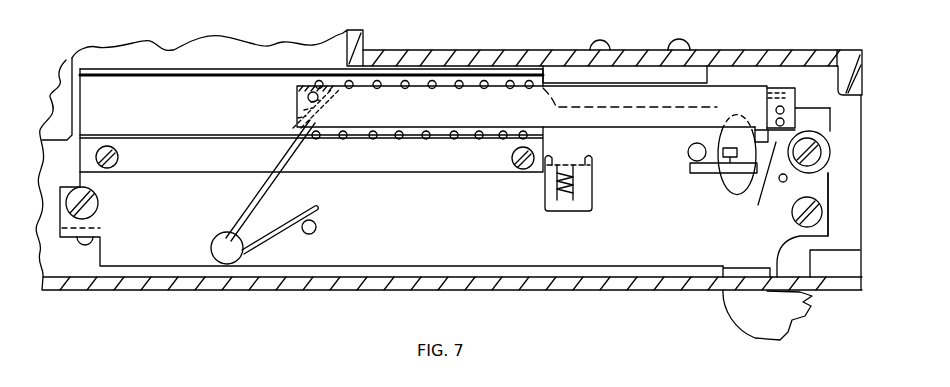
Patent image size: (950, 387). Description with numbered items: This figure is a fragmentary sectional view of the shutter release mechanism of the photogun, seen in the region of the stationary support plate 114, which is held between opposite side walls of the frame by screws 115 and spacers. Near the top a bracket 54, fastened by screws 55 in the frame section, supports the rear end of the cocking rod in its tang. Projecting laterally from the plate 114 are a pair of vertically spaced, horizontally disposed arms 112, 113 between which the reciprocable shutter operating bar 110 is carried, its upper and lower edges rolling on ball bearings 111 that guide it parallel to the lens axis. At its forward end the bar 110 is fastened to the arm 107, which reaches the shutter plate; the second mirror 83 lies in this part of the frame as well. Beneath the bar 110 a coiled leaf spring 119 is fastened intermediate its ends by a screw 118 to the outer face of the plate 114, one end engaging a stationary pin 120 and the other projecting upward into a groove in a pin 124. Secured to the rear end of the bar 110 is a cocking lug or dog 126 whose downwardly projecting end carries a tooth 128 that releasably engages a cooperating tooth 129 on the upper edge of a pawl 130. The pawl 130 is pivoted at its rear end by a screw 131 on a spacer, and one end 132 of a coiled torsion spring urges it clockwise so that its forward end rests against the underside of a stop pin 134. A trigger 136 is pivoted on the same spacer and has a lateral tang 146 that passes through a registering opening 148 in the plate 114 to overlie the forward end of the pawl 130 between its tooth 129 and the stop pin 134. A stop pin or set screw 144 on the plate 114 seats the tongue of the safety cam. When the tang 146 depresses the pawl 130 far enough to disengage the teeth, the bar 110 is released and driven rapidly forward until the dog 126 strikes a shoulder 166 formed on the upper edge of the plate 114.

The second mirror 83 is at (52, 76).
The arm 112 is at (234, 72).
The screws 55 is at (671, 47).
The bracket 54 is at (580, 67).
The shoulder 166 is at (553, 72).
The ball bearings 111 is at (403, 128).
The shutter operating bar 110 is at (516, 117).
The arm 107 is at (297, 90).
The pin 124 is at (297, 107).
The arm 113 is at (167, 132).
The support plate 114 is at (447, 227).
The screws 115 is at (97, 206).
The coiled leaf spring 119 is at (242, 200).
The screw 118 is at (211, 245).
The stationary pin 120 is at (315, 230).
The stop pin or set screw 144 is at (557, 183).
The stop pin 134 is at (688, 153).
The tang 146 is at (720, 175).
The opening 148 is at (728, 198).
The tooth 129 is at (767, 128).
The tooth 128 is at (770, 185).
The cocking lug or dog 126 is at (790, 88).
The screw 131 is at (823, 157).
The end of coiled torsion spring 132 is at (788, 178).
The pawl 130 is at (792, 213).
The trigger 136 is at (733, 315).